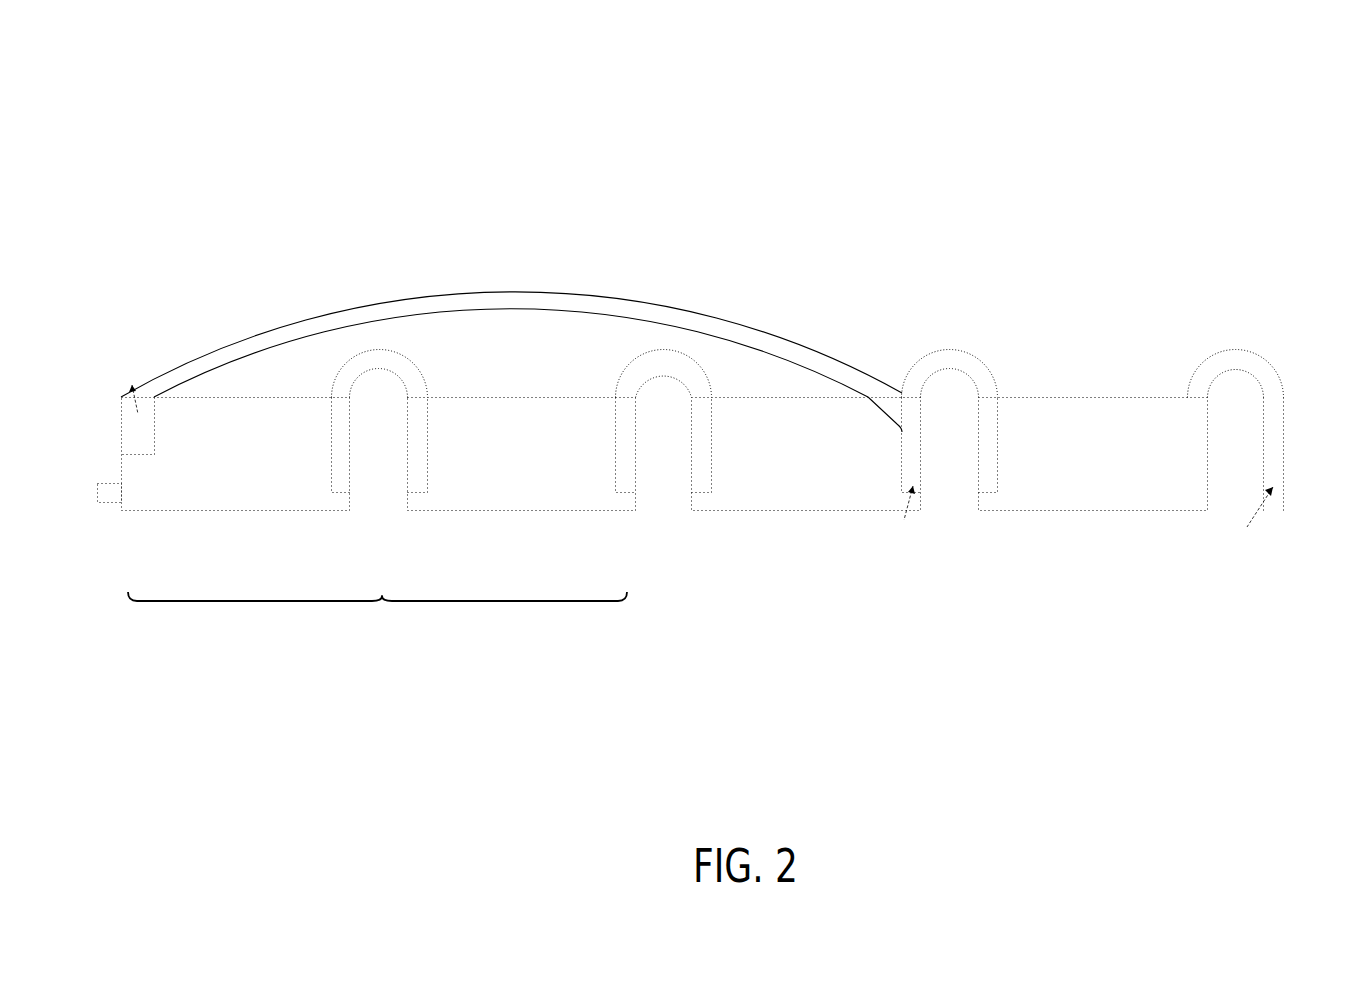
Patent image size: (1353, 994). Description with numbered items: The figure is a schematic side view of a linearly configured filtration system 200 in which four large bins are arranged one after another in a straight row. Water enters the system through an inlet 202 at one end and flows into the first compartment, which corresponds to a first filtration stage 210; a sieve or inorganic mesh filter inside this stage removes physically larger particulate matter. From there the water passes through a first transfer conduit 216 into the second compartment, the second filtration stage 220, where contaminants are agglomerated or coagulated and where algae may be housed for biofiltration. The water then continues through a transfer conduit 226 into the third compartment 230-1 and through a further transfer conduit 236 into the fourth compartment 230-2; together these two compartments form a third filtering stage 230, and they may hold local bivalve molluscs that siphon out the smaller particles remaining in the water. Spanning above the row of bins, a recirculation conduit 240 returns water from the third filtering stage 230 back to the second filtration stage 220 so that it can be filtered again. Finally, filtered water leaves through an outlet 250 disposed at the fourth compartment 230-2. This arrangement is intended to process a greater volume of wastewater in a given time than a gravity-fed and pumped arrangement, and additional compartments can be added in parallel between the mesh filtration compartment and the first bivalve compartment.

The linearly configured filtration system 200 is at (1197, 137).
The inlet 202 is at (1233, 350).
The first filtration stage 210 is at (1038, 511).
The first transfer conduit 216 is at (957, 349).
The second filtration stage 220 is at (720, 511).
The transfer conduit 226 is at (673, 349).
The third filtering stage 230 is at (377, 616).
The third compartment 230-1 is at (440, 511).
The fourth compartment 230-2 is at (223, 511).
The transfer conduit 236 is at (404, 356).
The recirculation conduit 240 is at (525, 291).
The outlet 250 is at (112, 503).